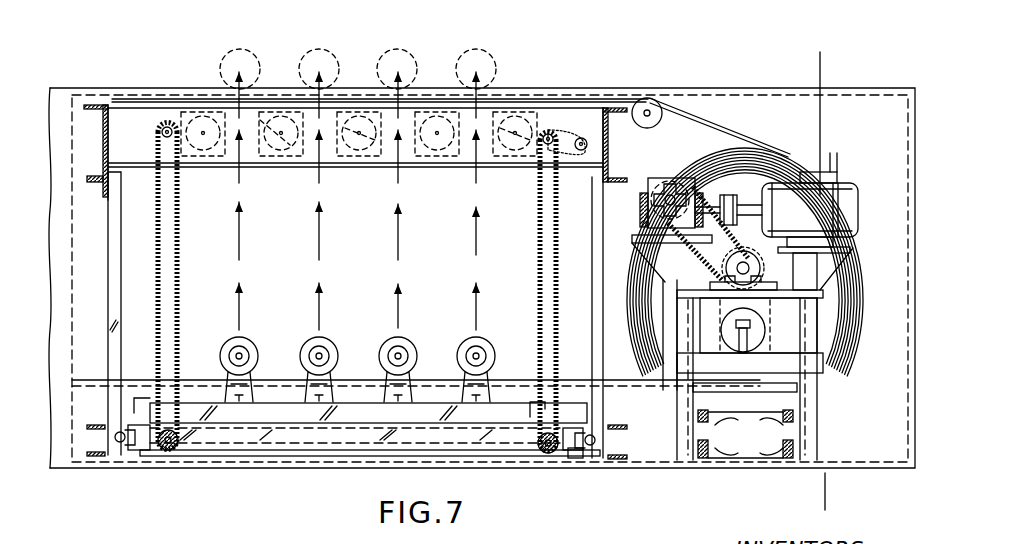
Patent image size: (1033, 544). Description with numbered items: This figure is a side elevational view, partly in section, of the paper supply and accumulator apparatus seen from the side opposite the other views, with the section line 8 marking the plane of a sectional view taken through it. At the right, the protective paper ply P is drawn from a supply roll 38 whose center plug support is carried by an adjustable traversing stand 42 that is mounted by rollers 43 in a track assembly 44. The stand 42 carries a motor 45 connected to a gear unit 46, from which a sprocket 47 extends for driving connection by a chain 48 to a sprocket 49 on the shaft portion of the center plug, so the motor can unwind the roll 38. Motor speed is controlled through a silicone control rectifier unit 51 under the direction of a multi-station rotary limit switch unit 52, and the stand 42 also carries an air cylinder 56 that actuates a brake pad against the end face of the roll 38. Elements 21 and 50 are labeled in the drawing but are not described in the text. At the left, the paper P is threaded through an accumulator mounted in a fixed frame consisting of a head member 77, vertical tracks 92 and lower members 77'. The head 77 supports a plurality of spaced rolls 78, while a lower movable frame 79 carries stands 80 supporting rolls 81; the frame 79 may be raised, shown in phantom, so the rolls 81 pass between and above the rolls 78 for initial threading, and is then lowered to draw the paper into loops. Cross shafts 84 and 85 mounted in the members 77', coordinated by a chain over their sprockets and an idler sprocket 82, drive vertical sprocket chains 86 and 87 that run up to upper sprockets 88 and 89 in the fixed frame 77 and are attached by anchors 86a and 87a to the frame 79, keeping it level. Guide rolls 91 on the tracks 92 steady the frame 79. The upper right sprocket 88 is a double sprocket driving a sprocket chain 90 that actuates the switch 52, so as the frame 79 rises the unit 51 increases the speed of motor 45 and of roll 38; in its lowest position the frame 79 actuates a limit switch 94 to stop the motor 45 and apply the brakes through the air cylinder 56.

The section line 8- 8 is at (824, 70).
The guide roller / frame 21 is at (608, 148).
The supply roll 38 is at (860, 284).
The adjustable traversing stand 42 is at (680, 330).
The rollers 43 is at (697, 440).
The track assembly 44 is at (749, 436).
The motor 45 is at (853, 210).
The gear unit 46 is at (665, 185).
The sprocket 47 is at (648, 214).
The chain 48 is at (738, 240).
The sprocket 49 is at (763, 237).
The chain 50 is at (695, 272).
The silicone control rectifier (SCR) unit 51 is at (840, 178).
The multi-station rotary limit switch unit 52 is at (585, 136).
The air cylinder 56 is at (757, 345).
The head member 77 is at (355, 116).
The lower members 77' is at (364, 474).
The rolls 78 is at (203, 160).
The lower movable frame 79 is at (577, 417).
The stands 80 is at (240, 354).
The rolls 81 is at (308, 56).
The idler sprocket 82 is at (330, 462).
The cross shaft 84 is at (548, 455).
The cross shaft 85 is at (178, 453).
The vertical sprocket chain 86 is at (538, 284).
The anchor 86a is at (535, 400).
The vertical sprocket chain 87 is at (178, 276).
The anchor 87a is at (165, 402).
The upper sprocket 88 is at (548, 128).
The upper sprocket 89 is at (160, 140).
The sprocket chain 90 is at (566, 128).
The guide rolls 91 is at (132, 452).
The vertical tracks 92 is at (114, 288).
The limit switch 94 is at (575, 460).
The protective paper ply P is at (350, 95).